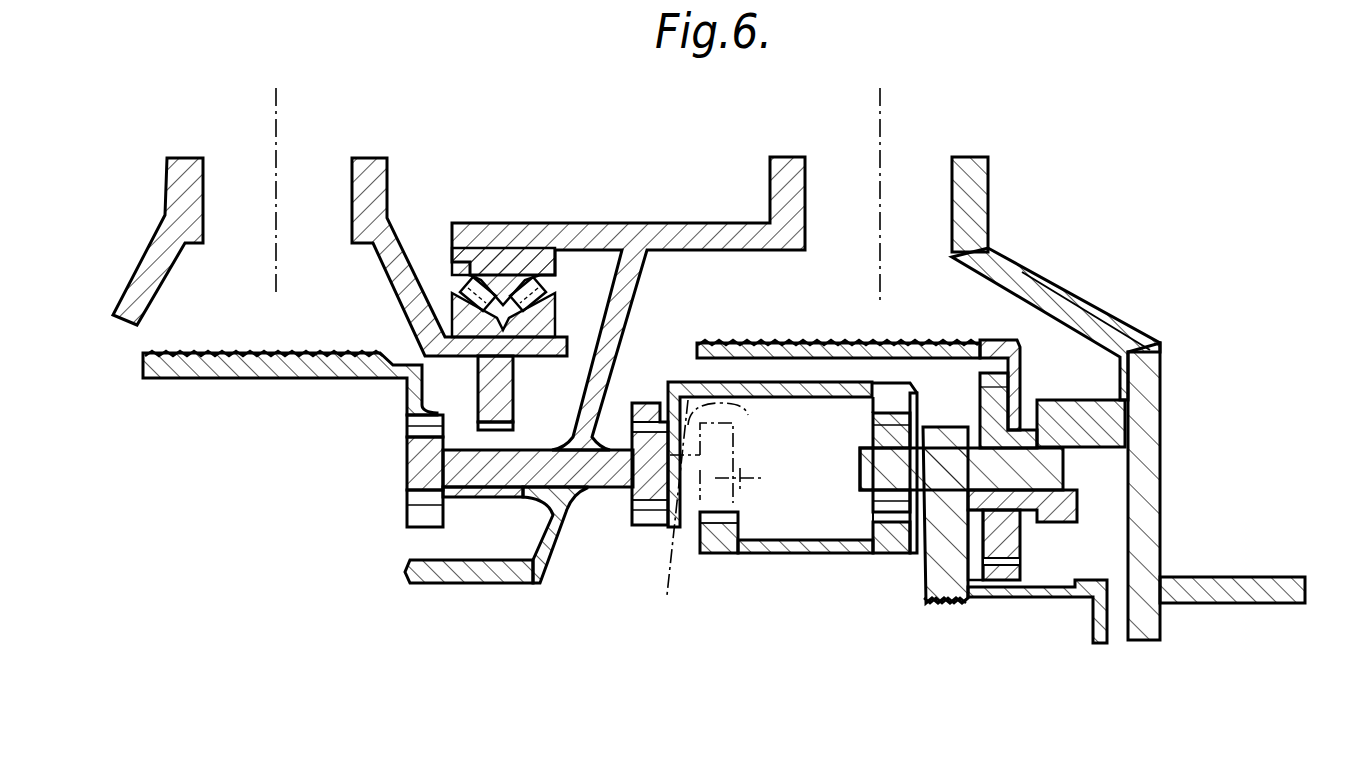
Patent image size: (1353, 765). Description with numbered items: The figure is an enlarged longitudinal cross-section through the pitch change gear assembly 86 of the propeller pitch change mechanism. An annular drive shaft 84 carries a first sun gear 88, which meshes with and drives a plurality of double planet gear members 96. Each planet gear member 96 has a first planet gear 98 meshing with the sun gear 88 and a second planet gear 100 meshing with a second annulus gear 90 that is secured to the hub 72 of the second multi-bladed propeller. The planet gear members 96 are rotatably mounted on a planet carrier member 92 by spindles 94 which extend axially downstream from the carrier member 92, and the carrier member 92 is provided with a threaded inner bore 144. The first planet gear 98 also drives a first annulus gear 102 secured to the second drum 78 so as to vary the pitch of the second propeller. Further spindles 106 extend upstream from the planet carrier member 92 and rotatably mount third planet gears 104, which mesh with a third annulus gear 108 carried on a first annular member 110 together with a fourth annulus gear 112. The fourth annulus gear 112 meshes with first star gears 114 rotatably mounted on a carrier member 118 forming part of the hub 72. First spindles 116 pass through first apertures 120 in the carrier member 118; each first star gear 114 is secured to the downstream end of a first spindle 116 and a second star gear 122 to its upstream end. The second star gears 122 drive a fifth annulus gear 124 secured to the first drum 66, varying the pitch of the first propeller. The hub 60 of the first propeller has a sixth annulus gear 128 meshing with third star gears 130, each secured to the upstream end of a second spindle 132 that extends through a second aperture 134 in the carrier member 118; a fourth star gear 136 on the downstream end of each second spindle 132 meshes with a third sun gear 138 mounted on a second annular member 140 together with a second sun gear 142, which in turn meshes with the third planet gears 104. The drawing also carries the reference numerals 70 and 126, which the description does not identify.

The hub of the first multi-bladed propeller 60 is at (378, 186).
The bearing 70 is at (515, 285).
The carrier member 118 is at (642, 258).
The hub of the second multi-bladed propeller 72 is at (1000, 272).
The first annulus gear 102 is at (993, 363).
The second annulus gear 90 is at (1073, 398).
The second planet gear 100 is at (1145, 372).
The second drum 78 is at (736, 345).
The first annular member 110 is at (806, 383).
The third planet gears 104 is at (882, 368).
The fourth annulus gear 112 is at (648, 398).
The third annulus gear 108 is at (898, 413).
The first drum 66 is at (188, 372).
The sixth annulus gear 128 is at (505, 393).
The fifth annulus gear 124 is at (412, 420).
The second star gears 122 is at (418, 452).
The third star gears 130 is at (430, 502).
The second apertures 134 is at (740, 408).
The spindles 106 is at (862, 470).
The fourth star gears 136 is at (745, 479).
The spindles 94 is at (1062, 465).
The double planet gear members 96 is at (1077, 503).
The annular drive shaft 84 is at (1057, 580).
The flange 126 is at (472, 582).
The first apertures 120 is at (497, 578).
The first spindles 116 is at (578, 515).
The first star gears 114 is at (652, 522).
The third sun gear 138 is at (718, 535).
The second spindles 132 is at (656, 511).
The second annular member 140 is at (783, 553).
The second sun gear 142 is at (893, 533).
The planet carrier member 92 is at (930, 558).
The pitch change gear assembly 86 is at (745, 600).
The threaded inner bore 144 is at (950, 602).
The first sun gear 88 is at (997, 570).
The first planet gear 98 is at (1000, 538).